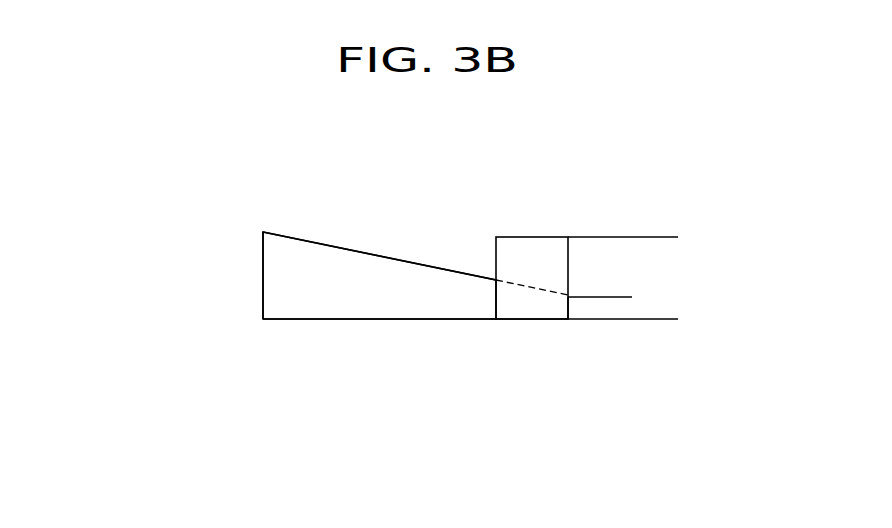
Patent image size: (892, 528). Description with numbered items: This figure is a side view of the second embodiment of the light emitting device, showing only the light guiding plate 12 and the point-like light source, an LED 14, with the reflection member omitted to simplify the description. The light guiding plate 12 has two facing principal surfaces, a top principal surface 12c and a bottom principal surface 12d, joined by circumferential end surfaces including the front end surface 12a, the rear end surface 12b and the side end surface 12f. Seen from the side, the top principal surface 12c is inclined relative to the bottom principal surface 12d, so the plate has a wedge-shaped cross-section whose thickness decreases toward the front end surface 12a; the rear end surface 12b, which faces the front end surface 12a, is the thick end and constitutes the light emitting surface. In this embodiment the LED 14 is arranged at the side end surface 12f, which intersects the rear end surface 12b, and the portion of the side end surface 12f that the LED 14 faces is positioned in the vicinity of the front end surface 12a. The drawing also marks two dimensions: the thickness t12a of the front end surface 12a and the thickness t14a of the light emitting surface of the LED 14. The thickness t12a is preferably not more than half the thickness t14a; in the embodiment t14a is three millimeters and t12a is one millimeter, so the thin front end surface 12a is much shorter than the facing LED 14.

The light guiding plate 12 is at (333, 228).
The front end surface 12a is at (568, 308).
The rear end surface 12b is at (263, 267).
The top principal surface 12c is at (427, 247).
The bottom principal surface 12d is at (413, 320).
The side end surface 12f is at (375, 302).
The LED 14 is at (562, 235).
The thickness of the light emitting surface of the LED t14a is at (662, 237).
The thickness of the front end surface t12a is at (613, 255).